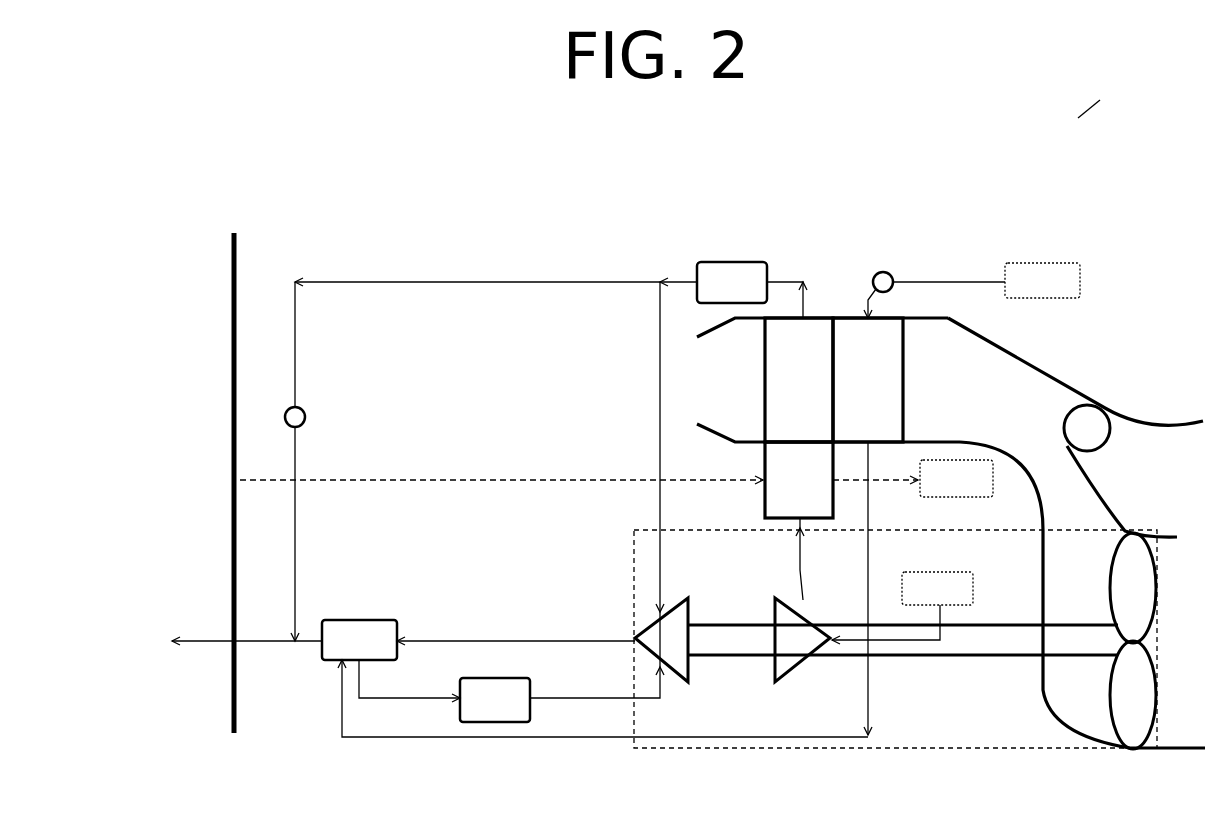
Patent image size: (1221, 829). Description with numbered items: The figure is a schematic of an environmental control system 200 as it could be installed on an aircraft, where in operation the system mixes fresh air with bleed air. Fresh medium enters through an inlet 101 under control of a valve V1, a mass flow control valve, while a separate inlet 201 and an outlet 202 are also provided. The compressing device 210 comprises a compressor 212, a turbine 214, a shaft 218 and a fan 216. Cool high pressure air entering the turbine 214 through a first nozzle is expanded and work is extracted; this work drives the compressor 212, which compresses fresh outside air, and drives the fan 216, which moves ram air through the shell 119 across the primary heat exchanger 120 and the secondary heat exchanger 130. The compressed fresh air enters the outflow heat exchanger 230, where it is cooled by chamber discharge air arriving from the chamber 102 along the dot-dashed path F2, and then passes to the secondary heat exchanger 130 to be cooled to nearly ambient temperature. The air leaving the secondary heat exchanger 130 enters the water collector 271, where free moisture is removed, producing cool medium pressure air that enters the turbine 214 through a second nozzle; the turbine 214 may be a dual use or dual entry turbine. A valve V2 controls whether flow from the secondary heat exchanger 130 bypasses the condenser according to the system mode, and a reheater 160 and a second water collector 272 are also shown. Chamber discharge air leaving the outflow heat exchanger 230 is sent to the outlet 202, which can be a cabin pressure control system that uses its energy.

The environmental control system 200 is at (1078, 118).
The chamber 102 is at (232, 235).
The valve V2 is at (286, 415).
The water collector 271 is at (733, 290).
The valve V1 is at (872, 275).
The inlet 101 is at (1042, 280).
The secondary heat exchanger 130 is at (799, 380).
The primary heat exchanger 120 is at (868, 380).
The shell 119 is at (1087, 398).
The outflow heat exchanger 230 is at (799, 480).
The outlet 202 is at (956, 478).
The medium path F2 is at (438, 475).
The inlet 201 is at (902, 608).
The shaft 218 is at (997, 660).
The turbine 214 is at (661, 640).
The compressor 212 is at (802, 640).
The fan 216 is at (1090, 690).
The reheater 160 is at (359, 640).
The water collector 272 is at (495, 700).
The compressing device 210 is at (723, 752).